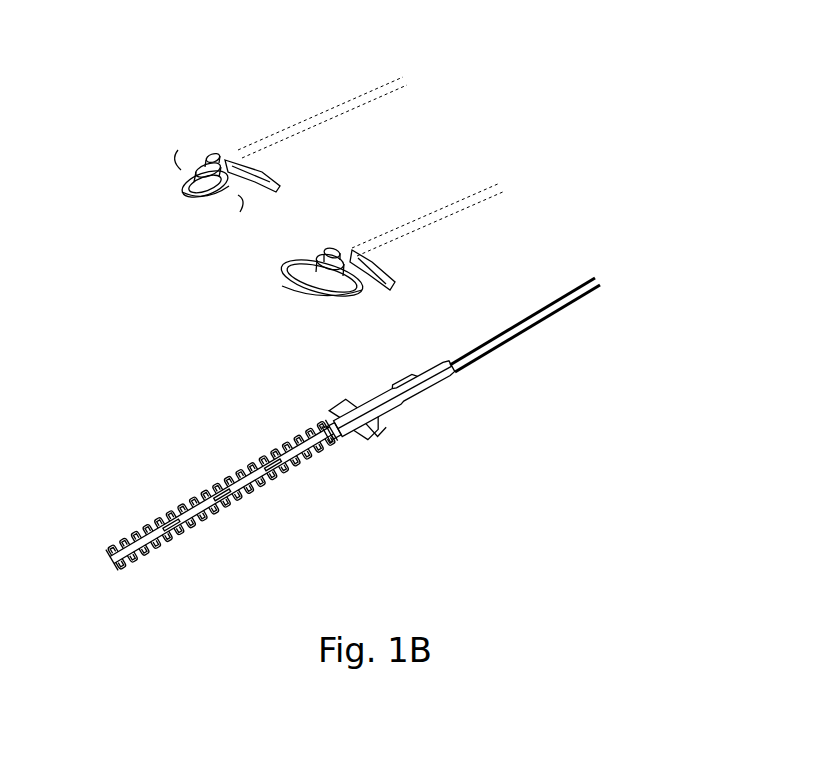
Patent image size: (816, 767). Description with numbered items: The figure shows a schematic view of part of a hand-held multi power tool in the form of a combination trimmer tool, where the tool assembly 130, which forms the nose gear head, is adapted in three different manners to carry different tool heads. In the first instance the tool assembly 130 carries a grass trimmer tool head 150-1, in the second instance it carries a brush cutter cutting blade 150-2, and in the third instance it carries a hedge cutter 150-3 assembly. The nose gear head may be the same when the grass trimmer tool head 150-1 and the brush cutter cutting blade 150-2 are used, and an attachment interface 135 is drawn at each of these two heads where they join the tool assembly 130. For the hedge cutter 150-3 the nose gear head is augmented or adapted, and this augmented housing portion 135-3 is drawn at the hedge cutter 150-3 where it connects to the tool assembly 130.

The tool assembly 130 is at (557, 270).
The tool interface / attachment hub 135 is at (213, 157).
The hedge trimmer gear housing 135-3 is at (415, 370).
The grass trimmer tool head 150-1 is at (203, 197).
The brush cutter cutting blade 150-2 is at (320, 297).
The hedge cutter assembly 150-3 is at (384, 432).